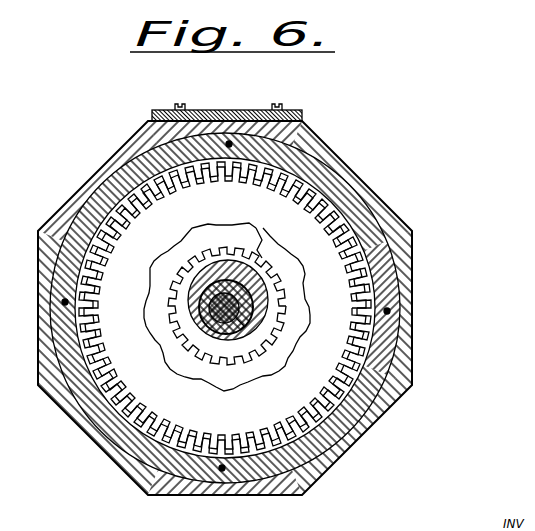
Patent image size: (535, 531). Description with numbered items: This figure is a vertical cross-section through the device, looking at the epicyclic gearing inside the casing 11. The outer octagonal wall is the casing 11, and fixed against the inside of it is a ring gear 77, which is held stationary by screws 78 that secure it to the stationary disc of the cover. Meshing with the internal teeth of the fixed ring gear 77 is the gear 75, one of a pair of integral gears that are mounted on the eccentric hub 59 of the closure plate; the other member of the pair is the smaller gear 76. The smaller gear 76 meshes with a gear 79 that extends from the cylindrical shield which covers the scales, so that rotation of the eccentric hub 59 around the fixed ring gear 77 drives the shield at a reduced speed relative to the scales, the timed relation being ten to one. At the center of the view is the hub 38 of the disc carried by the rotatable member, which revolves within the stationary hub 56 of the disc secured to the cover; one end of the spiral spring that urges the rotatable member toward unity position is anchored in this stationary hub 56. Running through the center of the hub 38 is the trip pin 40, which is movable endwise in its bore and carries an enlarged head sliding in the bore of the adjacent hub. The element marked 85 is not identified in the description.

The casing 11 is at (376, 204).
The fixed ring gear 77 is at (322, 188).
The gear 75 is at (103, 282).
The screws 78 is at (389, 311).
The mounting flange 85 is at (262, 110).
The gear 79 is at (304, 294).
The smaller gear 76 is at (262, 240).
The eccentric hub 59 is at (247, 262).
The hub 56 is at (250, 310).
The hub 38 is at (243, 320).
The trip pin 40 is at (250, 328).